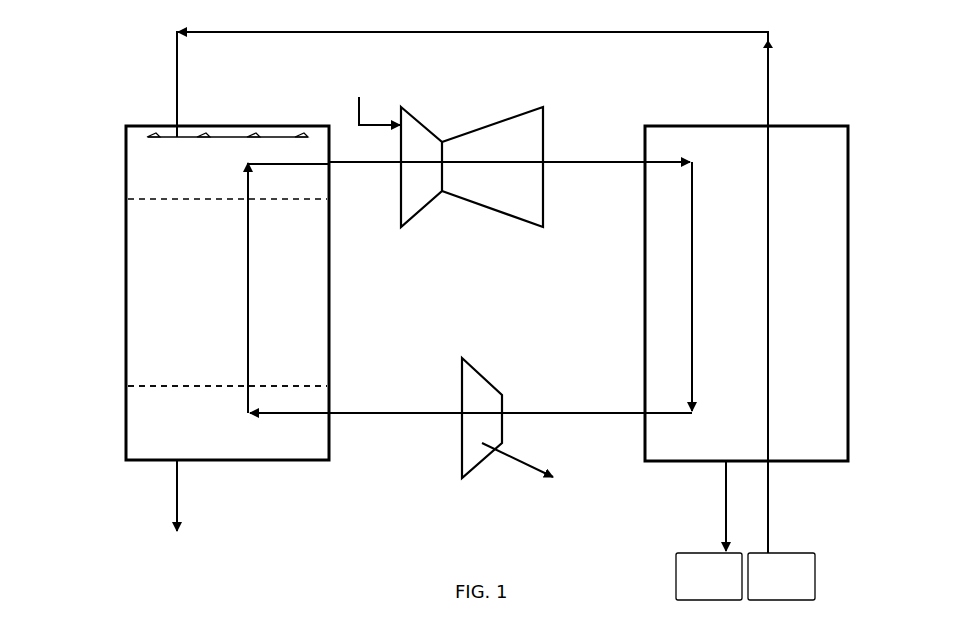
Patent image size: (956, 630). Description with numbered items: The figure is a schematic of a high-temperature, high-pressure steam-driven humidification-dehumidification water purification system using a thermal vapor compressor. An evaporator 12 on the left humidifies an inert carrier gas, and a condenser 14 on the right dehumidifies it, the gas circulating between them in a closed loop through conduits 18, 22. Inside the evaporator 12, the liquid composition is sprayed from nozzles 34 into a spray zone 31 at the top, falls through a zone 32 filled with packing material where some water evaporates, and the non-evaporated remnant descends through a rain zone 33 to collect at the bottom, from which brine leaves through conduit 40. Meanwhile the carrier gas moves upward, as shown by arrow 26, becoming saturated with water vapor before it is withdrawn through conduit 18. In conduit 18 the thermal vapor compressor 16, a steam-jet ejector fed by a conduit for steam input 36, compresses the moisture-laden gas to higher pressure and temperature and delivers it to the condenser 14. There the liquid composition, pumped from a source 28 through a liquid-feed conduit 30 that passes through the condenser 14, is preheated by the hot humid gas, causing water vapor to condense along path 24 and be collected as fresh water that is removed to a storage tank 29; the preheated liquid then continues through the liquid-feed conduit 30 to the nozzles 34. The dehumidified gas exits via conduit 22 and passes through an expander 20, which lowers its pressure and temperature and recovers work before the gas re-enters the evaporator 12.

The evaporator 12 is at (100, 262).
The condenser 14 is at (746, 293).
The thermal vapor compressor 16 is at (498, 190).
The conduit 18 is at (574, 163).
The expander 20 is at (472, 382).
The conduit 22 is at (566, 412).
The path 24 is at (694, 245).
The arrow 26 is at (249, 252).
The source 28 is at (781, 576).
The storage tank 29 is at (709, 530).
The liquid-feed conduit 30 is at (524, 36).
The spray zone 31 is at (227, 293).
The zone including packing material 32 is at (227, 329).
The rain zone 33 is at (227, 408).
The nozzles 34 is at (150, 133).
The conduit for steam input 36 is at (357, 111).
The conduit 40 is at (177, 490).